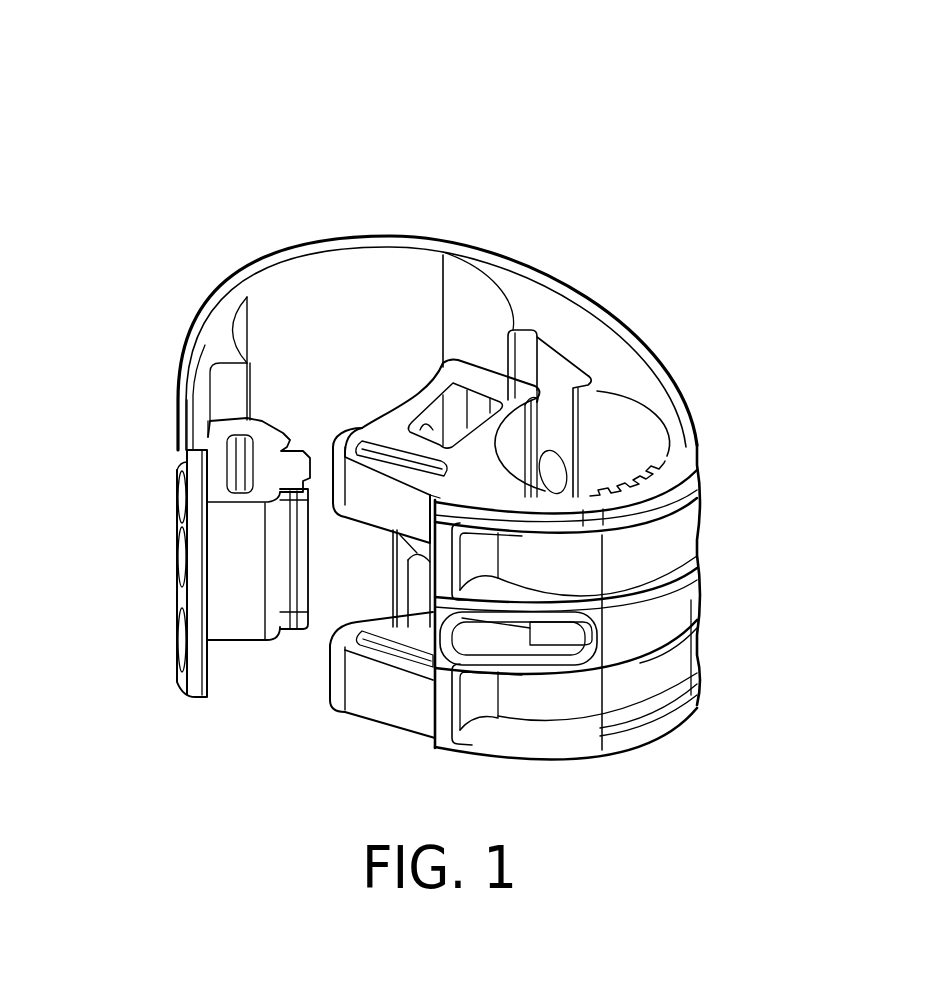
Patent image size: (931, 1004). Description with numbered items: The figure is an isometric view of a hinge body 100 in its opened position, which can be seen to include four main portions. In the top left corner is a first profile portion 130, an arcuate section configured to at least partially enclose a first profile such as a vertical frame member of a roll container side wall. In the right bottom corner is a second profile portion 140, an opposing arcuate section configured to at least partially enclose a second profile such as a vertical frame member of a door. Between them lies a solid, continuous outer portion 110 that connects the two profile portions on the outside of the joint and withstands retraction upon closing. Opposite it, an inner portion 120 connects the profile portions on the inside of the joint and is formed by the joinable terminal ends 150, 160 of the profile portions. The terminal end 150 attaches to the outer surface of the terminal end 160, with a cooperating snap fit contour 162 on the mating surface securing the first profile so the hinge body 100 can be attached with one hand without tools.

The hinge body 100 is at (358, 195).
The outer portion 110 is at (553, 272).
The inner portion 120 is at (343, 712).
The first profile portion 130 is at (235, 273).
The second profile portion 140 is at (677, 727).
The terminal end of the first profile portion 150 is at (177, 660).
The terminal end of the second profile portion 160 is at (322, 677).
The snap fit contour 162 is at (405, 596).